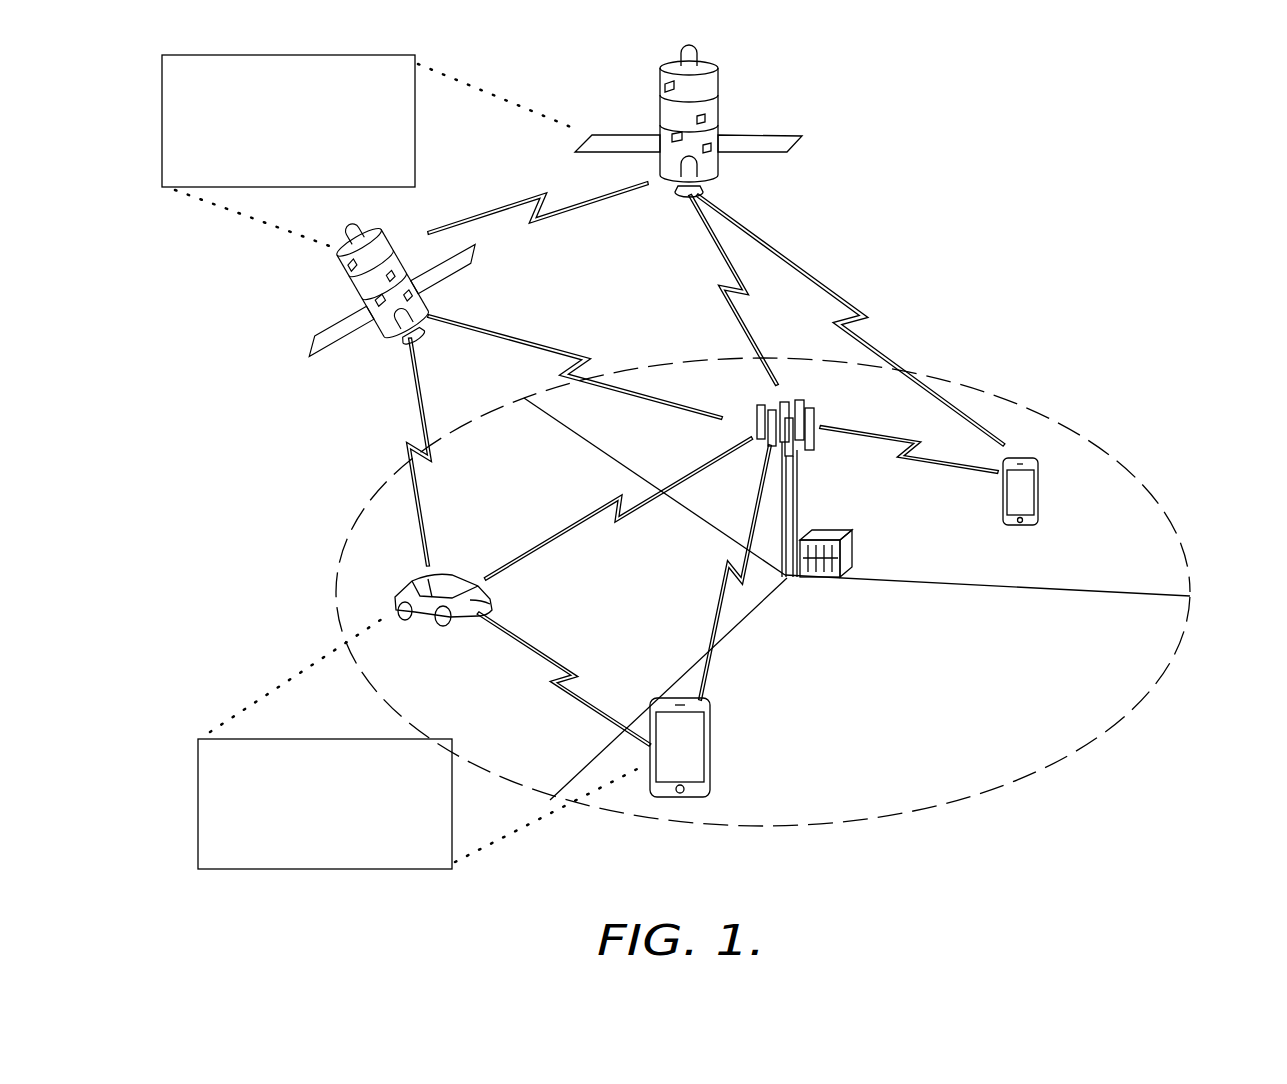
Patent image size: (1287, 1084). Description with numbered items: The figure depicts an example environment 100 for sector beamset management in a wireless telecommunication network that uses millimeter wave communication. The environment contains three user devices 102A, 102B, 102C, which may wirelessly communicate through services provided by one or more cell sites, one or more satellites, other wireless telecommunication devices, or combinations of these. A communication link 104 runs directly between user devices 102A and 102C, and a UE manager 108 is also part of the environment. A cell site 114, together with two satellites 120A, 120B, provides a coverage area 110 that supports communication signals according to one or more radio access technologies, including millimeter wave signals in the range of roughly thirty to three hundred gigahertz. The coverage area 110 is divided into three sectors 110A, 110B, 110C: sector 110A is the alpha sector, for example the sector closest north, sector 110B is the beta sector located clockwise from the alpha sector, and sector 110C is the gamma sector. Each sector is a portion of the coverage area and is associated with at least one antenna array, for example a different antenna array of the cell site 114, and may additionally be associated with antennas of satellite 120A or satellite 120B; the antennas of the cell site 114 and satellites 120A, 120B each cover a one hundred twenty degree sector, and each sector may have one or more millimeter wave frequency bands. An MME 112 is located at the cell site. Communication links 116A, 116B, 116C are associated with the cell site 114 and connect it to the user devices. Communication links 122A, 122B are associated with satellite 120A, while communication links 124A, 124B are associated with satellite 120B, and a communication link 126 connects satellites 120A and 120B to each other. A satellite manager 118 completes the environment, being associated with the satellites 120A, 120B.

The example environment 100 is at (1170, 143).
The user device 102A is at (448, 575).
The user device 102B is at (1040, 505).
The user device 102C is at (712, 725).
The communication link 104 is at (548, 690).
The UE manager 108 is at (421, 743).
The coverage area 110 is at (1162, 510).
The sector 110A is at (631, 486).
The sector 110B is at (987, 571).
The sector 110C is at (750, 689).
The MME 112 is at (813, 578).
The cell site 114 is at (812, 399).
The communication link 116A is at (673, 480).
The communication link 116B is at (937, 468).
The communication link 116C is at (700, 605).
The satellite manager 118 is at (370, 151).
The satellite 120A is at (748, 135).
The satellite 120B is at (343, 278).
The communication link 122A is at (838, 300).
The communication link 122B is at (722, 300).
The communication link 124A is at (395, 400).
The communication link 124B is at (582, 355).
The communication link 126 is at (498, 205).